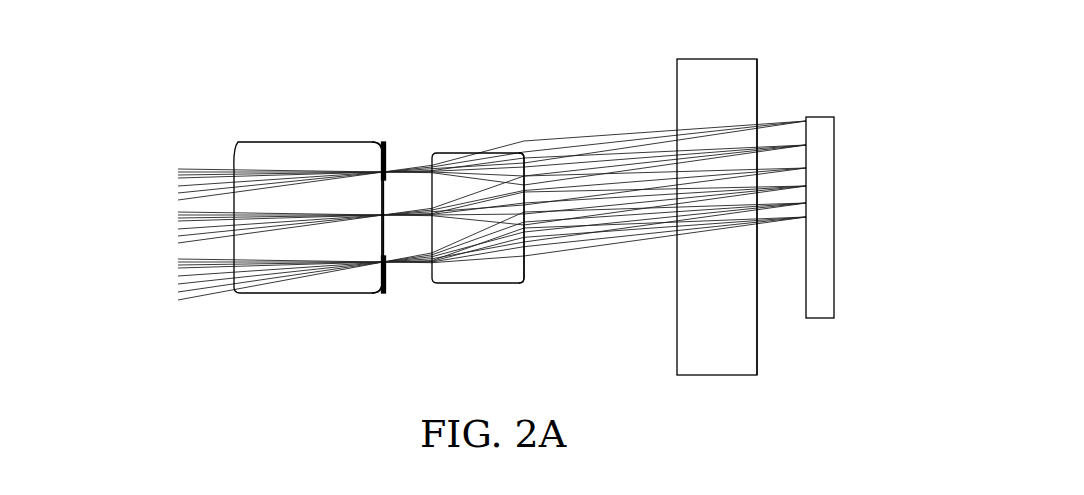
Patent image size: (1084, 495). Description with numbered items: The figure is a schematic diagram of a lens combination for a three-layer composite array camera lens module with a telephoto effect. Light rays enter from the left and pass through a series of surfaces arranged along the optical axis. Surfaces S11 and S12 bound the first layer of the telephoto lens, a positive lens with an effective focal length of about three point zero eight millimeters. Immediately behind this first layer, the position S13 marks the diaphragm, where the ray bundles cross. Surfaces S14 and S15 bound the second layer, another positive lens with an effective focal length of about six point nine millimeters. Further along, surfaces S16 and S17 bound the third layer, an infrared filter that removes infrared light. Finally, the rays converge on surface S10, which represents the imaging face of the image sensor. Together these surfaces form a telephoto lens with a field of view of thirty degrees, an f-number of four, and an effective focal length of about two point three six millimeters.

The imaging face S10 is at (810, 283).
The first surface of first layer S11 is at (240, 140).
The second surface of first layer S12 is at (377, 140).
The diaphragm position S13 is at (384, 143).
The first surface of second layer S14 is at (434, 152).
The second surface of second layer S15 is at (523, 152).
The first surface of infrared filter S16 is at (677, 58).
The second surface of infrared filter S17 is at (783, 47).